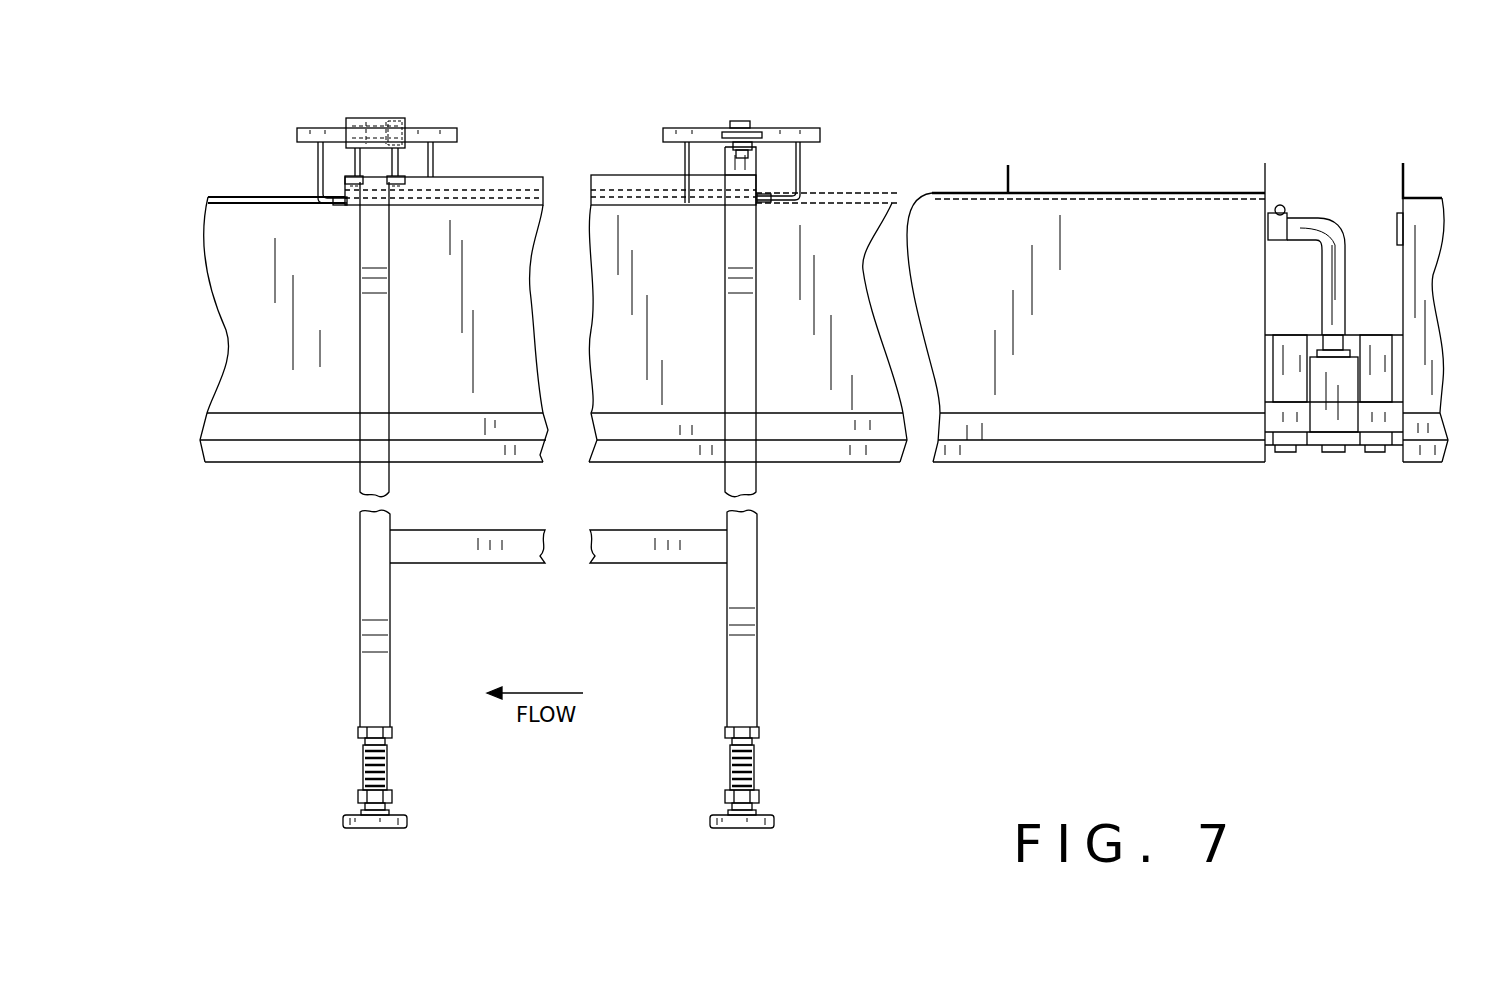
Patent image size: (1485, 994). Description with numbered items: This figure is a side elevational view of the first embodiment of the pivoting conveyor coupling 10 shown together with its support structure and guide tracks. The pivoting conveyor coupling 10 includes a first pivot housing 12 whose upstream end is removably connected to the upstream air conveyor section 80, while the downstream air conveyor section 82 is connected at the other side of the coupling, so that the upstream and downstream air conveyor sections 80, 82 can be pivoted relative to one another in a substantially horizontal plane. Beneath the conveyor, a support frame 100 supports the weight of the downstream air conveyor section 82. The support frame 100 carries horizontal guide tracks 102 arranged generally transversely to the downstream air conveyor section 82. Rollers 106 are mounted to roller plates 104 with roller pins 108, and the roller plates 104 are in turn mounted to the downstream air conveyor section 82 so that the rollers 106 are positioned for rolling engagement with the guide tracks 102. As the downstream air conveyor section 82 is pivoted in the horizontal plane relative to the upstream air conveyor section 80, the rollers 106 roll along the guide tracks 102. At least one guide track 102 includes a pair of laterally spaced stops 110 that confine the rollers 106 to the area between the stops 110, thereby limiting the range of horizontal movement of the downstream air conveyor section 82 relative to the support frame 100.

The pivoting conveyor coupling 10 is at (1333, 420).
The first pivot housing 12 is at (1387, 423).
The upstream air conveyor section 80 is at (1425, 213).
The downstream air conveyor section 82 is at (252, 222).
The support frame 100 is at (372, 348).
The horizontal guide tracks 102 is at (363, 147).
The roller plates 104 is at (437, 130).
The rollers 106 is at (368, 127).
The roller pins 108 is at (357, 133).
The stops 110 is at (400, 118).